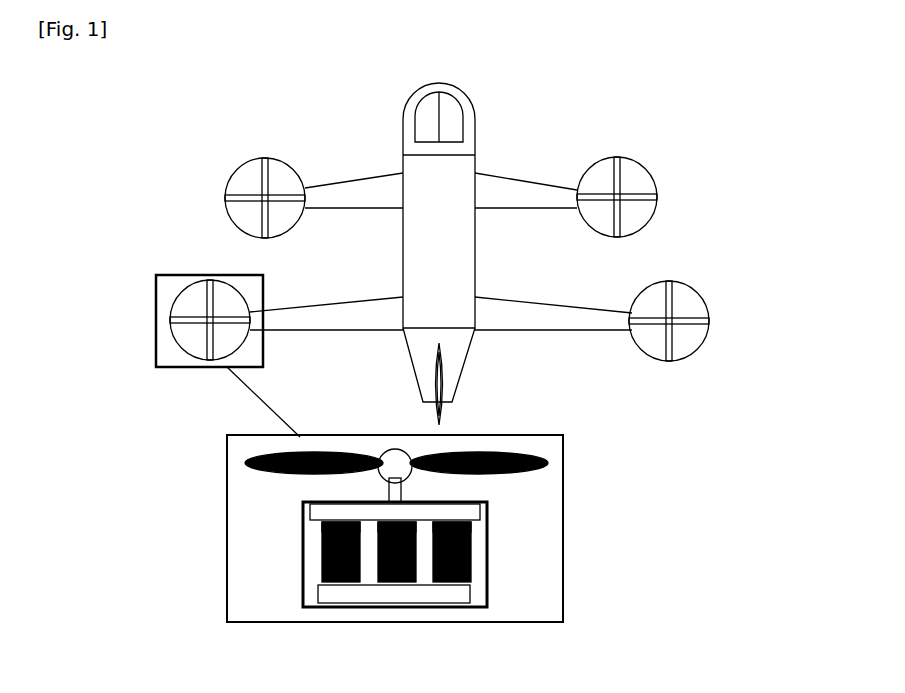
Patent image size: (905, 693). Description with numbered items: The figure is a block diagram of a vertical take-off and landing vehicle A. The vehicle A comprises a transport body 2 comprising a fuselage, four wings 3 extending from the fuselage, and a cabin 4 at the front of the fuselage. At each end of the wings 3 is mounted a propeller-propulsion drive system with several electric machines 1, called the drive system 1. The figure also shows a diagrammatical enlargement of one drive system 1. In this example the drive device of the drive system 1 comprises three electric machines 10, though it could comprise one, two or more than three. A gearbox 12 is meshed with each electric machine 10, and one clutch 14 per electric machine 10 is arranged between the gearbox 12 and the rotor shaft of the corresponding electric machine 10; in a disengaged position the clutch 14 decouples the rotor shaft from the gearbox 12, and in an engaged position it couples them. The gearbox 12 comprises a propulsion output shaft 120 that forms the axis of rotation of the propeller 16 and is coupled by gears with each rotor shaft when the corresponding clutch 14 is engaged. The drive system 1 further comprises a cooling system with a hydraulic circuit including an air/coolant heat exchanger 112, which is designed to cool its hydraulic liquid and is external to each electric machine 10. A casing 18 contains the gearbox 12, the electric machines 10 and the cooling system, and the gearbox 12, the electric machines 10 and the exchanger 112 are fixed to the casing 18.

The vertical take-off and landing vehicle A is at (541, 254).
The propeller-propulsion drive system with several electric machines 1 is at (160, 357).
The transport body 2 is at (462, 263).
The wings 3 is at (513, 193).
The cabin 4 is at (437, 131).
The electric machine 10 is at (460, 558).
The gearbox 12 is at (330, 510).
The clutch 14 is at (470, 523).
The propeller 16 is at (315, 467).
The casing 18 is at (300, 582).
The air/coolant heat exchanger 112 is at (460, 600).
The propulsion output shaft 120 is at (400, 490).